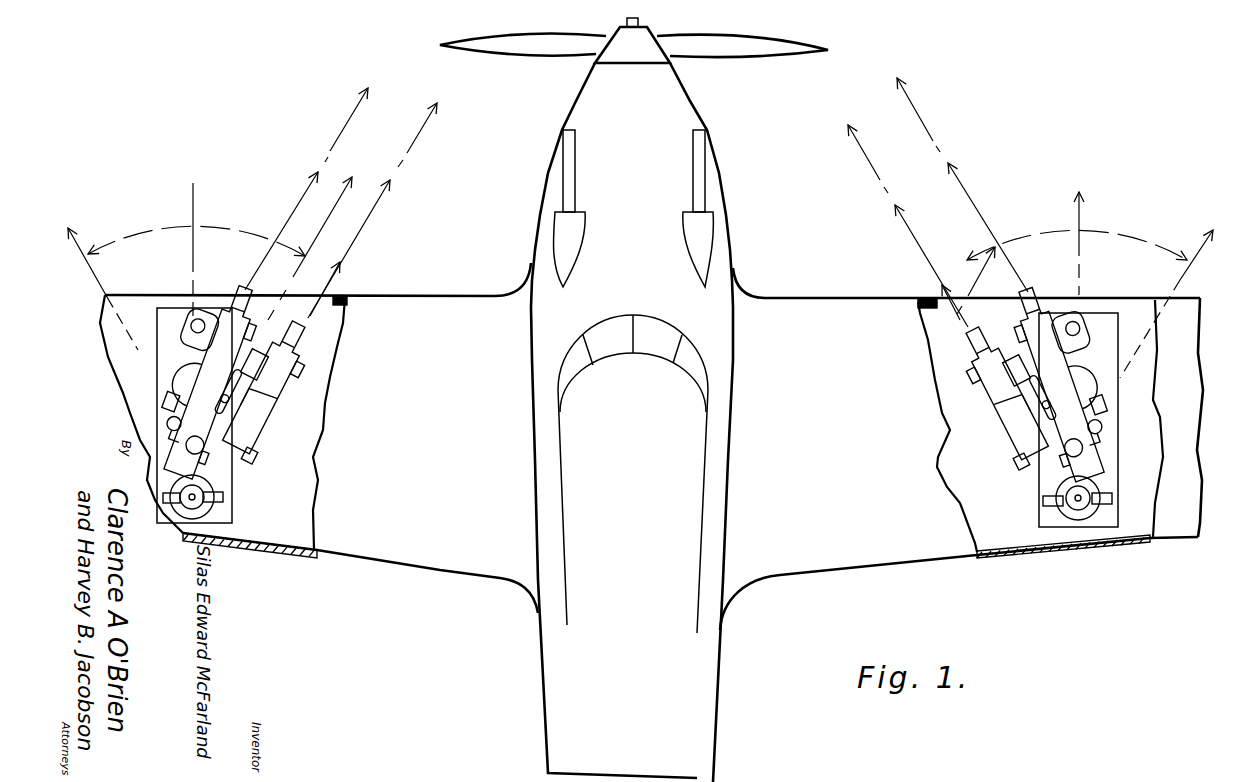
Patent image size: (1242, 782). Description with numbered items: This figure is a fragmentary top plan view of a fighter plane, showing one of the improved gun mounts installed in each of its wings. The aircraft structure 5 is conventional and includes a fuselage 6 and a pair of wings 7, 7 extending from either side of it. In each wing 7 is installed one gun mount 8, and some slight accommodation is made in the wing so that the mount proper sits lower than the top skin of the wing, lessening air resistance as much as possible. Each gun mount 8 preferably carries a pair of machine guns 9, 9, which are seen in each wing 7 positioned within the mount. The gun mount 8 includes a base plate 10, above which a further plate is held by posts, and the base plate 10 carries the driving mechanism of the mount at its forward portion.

The aircraft structure 5 is at (722, 289).
The fuselage 6 is at (563, 678).
The wing 7 is at (373, 306).
The gun mount 8 is at (1036, 483).
The machine gun 9 is at (1057, 350).
The base plate 10 is at (222, 476).